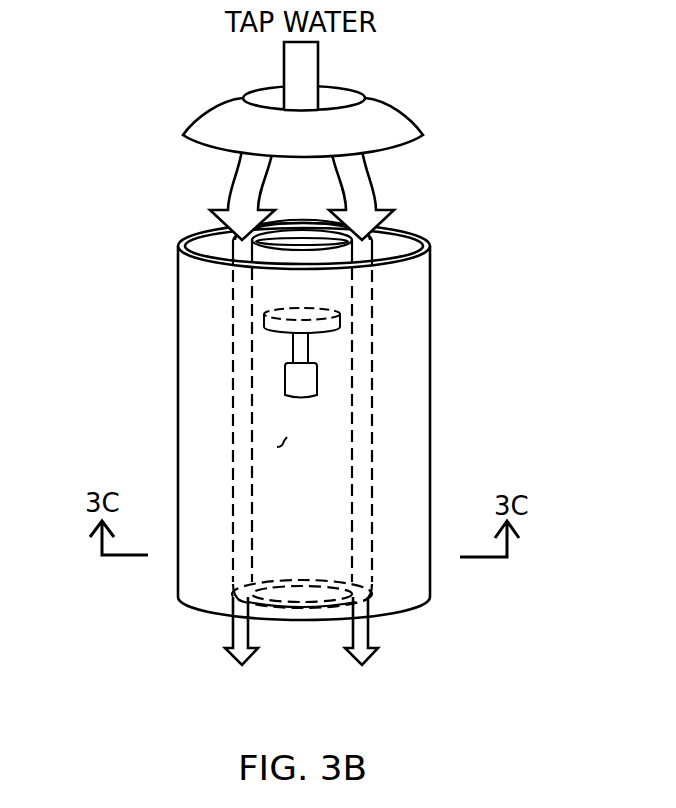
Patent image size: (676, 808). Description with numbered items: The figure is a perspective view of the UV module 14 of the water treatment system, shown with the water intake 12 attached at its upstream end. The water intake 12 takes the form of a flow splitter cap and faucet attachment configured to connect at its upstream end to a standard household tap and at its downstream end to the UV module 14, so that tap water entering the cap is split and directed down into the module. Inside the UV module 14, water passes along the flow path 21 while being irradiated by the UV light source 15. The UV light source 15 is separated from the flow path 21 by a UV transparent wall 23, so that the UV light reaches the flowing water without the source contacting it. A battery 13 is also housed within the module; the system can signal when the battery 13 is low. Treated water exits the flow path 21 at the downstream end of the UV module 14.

The water intake 12 is at (415, 115).
The battery 13 is at (252, 312).
The UV module 14 is at (451, 428).
The UV light source 15 is at (298, 380).
The flow path 21 is at (361, 604).
The UV transparent wall 23 is at (277, 445).